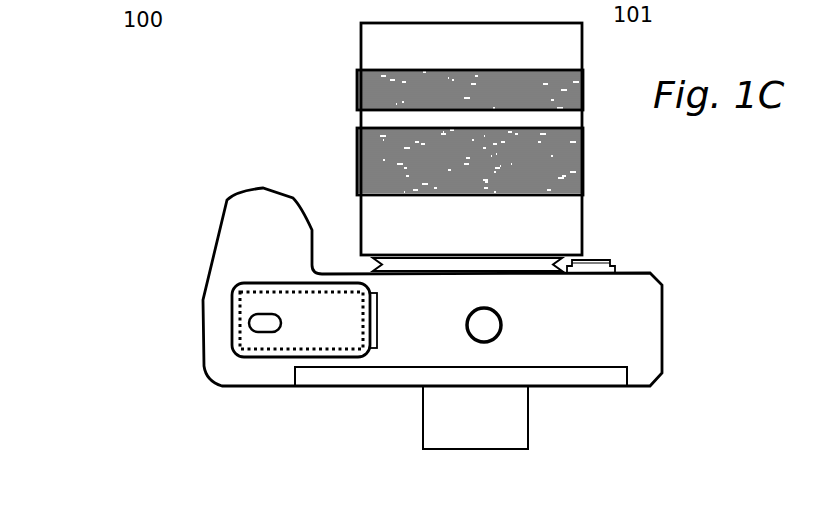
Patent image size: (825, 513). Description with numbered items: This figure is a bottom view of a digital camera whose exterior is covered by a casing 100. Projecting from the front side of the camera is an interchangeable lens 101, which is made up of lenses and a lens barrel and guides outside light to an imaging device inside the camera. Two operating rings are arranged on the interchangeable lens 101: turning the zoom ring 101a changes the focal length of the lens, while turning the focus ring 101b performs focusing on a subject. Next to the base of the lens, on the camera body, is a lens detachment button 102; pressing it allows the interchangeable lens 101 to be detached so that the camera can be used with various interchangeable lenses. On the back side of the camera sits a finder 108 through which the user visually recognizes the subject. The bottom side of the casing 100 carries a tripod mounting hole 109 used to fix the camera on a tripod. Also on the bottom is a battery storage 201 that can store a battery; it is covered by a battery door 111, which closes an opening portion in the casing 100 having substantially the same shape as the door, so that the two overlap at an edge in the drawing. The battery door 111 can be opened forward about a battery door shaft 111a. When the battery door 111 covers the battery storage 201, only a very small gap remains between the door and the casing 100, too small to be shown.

The casing 100 is at (213, 237).
The interchangeable lens 101 is at (361, 36).
The zoom ring 101a is at (357, 90).
The focus ring 101b is at (357, 155).
The lens detachment button 102 is at (612, 258).
The finder 108 is at (423, 434).
The tripod mounting hole 109 is at (503, 333).
The battery door 111 is at (233, 325).
The battery door shaft 111a is at (370, 333).
The battery storage 201 is at (242, 302).